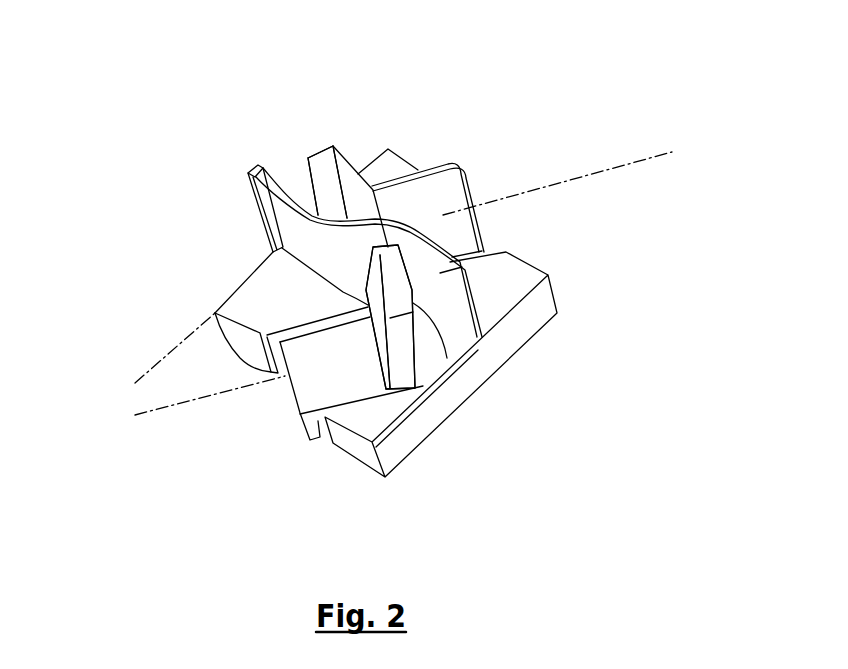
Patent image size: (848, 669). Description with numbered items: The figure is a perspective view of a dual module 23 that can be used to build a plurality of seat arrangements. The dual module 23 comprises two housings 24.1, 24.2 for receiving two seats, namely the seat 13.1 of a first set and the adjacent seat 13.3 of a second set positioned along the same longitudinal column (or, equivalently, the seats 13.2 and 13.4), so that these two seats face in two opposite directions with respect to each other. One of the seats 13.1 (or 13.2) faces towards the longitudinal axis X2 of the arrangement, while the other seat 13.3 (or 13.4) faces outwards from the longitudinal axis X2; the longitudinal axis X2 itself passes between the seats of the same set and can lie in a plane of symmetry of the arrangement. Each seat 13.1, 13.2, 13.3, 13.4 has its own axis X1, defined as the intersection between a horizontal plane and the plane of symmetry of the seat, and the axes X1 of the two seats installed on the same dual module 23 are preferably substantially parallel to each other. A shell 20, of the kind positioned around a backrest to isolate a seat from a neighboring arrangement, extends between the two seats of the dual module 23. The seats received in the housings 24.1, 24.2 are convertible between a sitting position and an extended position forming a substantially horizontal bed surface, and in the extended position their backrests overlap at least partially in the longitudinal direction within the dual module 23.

The shell 20 is at (518, 250).
The dual module 23 is at (260, 118).
The seat 13.1 is at (350, 377).
The seat 13.2 is at (350, 377).
The seat 13.3 is at (344, 175).
The seat 13.4 is at (344, 175).
The housing 24.1 is at (435, 357).
The housing 24.2 is at (420, 170).
The seat axis X1 is at (570, 177).
The longitudinal axis X2 is at (160, 362).